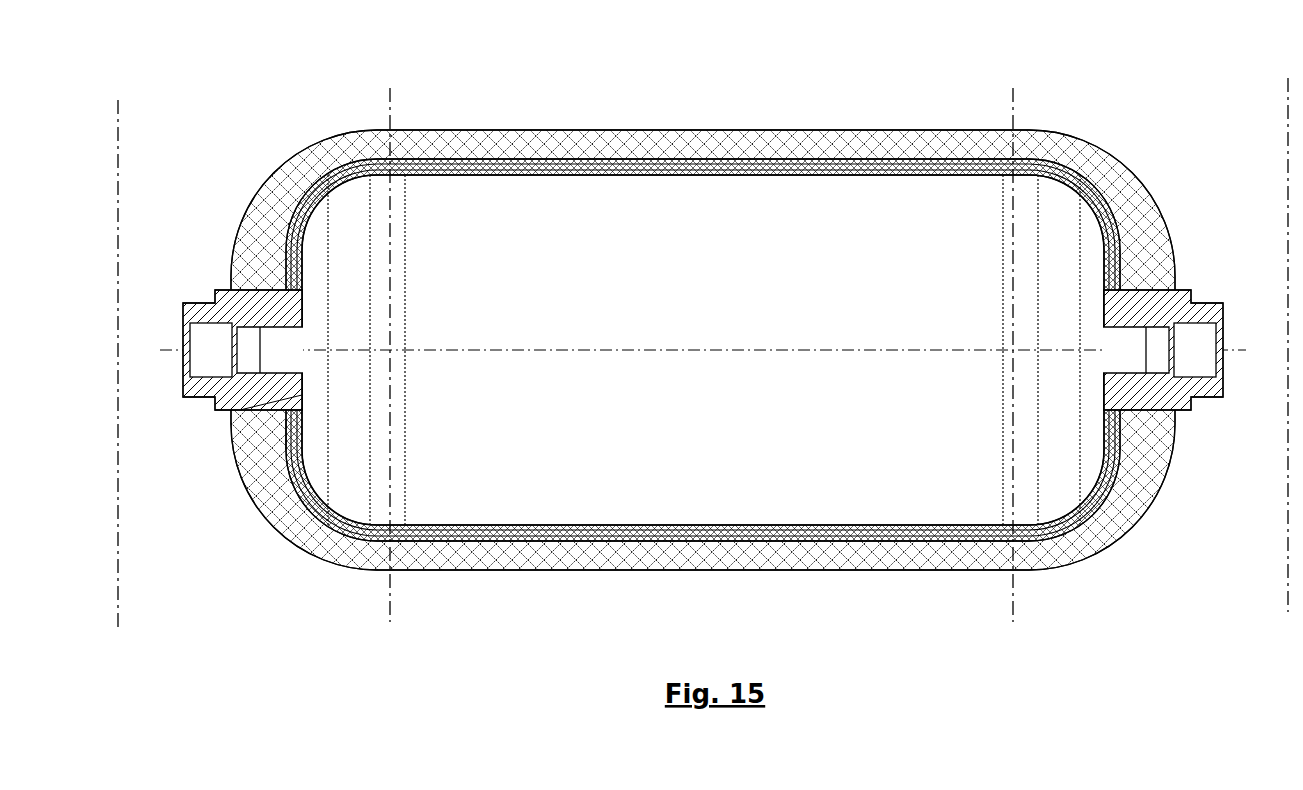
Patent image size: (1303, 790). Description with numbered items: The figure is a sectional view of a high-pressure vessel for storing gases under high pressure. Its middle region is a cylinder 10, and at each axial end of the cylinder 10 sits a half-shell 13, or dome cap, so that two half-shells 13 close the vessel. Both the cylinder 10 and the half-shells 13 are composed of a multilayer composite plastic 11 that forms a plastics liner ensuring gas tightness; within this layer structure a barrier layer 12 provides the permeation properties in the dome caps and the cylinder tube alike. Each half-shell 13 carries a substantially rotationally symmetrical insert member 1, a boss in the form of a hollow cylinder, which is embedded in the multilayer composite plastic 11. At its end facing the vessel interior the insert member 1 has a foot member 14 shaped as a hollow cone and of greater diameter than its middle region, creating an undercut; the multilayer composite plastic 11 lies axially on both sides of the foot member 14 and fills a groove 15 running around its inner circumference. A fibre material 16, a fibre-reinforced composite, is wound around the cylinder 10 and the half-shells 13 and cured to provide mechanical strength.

The insert member 1 is at (225, 298).
The cylinder 10 is at (795, 530).
The multilayer composite plastic 11 is at (380, 168).
The barrier layer 12 is at (330, 195).
The half-shell 13 is at (703, 364).
The foot member 14 is at (297, 432).
The groove 15 is at (290, 387).
The fibre material 16 is at (935, 145).